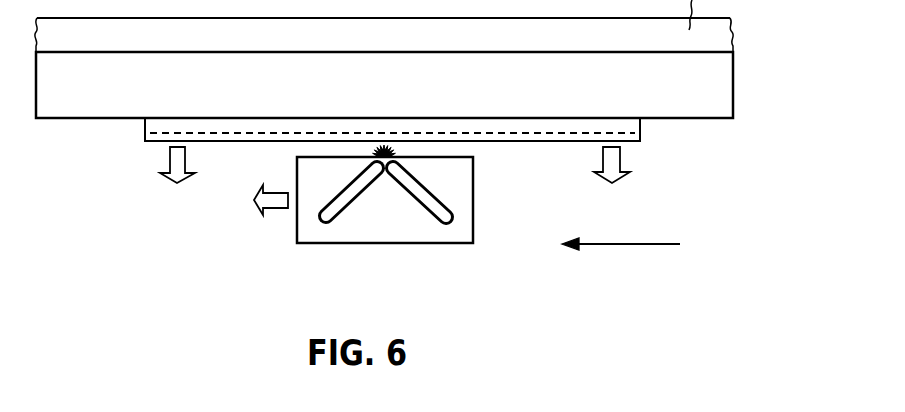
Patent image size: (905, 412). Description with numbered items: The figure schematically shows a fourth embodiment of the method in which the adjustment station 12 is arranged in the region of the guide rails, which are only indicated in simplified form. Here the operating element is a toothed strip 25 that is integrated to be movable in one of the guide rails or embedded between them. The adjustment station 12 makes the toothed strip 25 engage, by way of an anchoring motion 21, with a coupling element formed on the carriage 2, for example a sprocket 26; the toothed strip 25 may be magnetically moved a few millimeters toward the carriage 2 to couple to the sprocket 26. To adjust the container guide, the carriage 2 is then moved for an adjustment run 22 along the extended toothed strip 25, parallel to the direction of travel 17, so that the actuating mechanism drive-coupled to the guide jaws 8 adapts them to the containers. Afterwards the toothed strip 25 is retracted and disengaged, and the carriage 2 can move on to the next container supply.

The carriage 2 is at (474, 205).
The guide jaws 8 is at (436, 214).
The adjustment station 12 is at (720, 88).
The direction of travel 17 is at (668, 246).
The anchoring motion 21 is at (185, 160).
The adjustment run 22 is at (275, 208).
The toothed strip 25 is at (645, 128).
The sprocket 26 is at (378, 168).